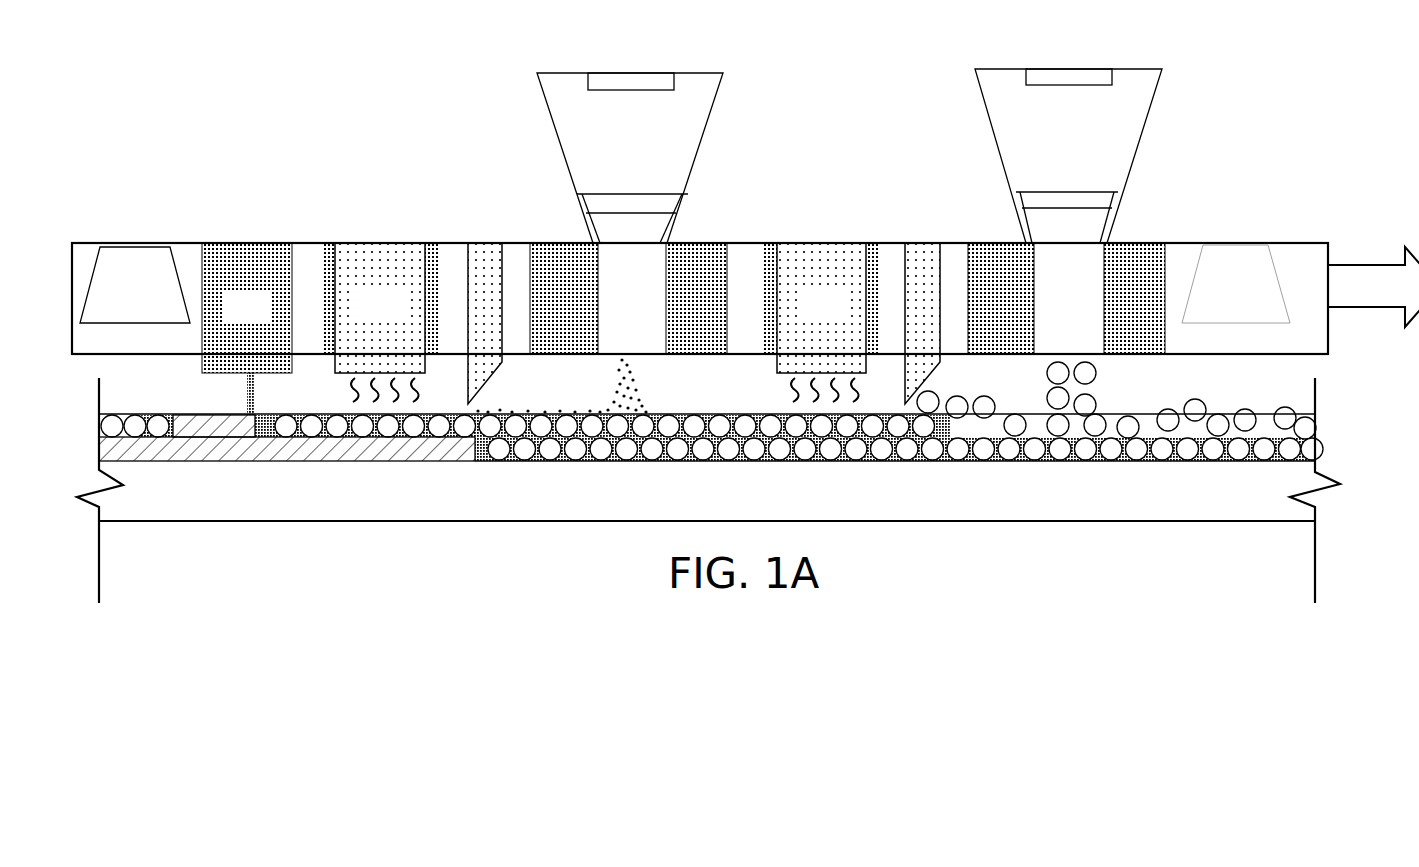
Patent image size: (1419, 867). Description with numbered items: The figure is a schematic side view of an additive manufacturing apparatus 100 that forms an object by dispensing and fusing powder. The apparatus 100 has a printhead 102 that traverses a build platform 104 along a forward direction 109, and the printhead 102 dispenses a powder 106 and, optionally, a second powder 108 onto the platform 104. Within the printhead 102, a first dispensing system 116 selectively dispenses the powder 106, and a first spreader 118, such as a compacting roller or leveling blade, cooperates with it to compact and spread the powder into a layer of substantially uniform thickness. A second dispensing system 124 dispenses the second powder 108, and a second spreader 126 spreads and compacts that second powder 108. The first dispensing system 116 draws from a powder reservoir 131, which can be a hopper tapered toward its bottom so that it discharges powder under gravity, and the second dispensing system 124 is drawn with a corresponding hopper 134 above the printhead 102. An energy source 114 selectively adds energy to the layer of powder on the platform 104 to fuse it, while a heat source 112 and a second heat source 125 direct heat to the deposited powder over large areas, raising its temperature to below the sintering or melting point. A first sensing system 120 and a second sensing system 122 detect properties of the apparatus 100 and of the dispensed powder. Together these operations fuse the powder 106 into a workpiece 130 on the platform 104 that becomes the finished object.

The additive manufacturing apparatus 100 is at (120, 190).
The printhead 102 is at (266, 243).
The build platform 104 is at (428, 507).
The powder 106 is at (1097, 407).
The second powder 108 is at (645, 410).
The forward direction 109 is at (1390, 298).
The heat source 112 is at (856, 318).
The energy source 114 is at (282, 318).
The first dispensing system 116 is at (1190, 120).
The first spreader 118 is at (923, 262).
The first sensing system 120 is at (162, 314).
The second sensing system 122 is at (1264, 314).
The second dispensing system 124 is at (520, 170).
The second heat source 125 is at (414, 318).
The second spreader 126 is at (483, 243).
The workpiece 130 is at (213, 437).
The powder reservoir 131 is at (1098, 149).
The first hopper 134 is at (660, 149).